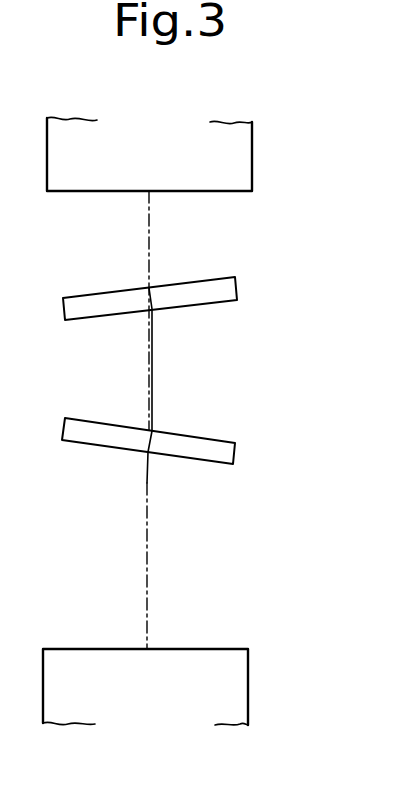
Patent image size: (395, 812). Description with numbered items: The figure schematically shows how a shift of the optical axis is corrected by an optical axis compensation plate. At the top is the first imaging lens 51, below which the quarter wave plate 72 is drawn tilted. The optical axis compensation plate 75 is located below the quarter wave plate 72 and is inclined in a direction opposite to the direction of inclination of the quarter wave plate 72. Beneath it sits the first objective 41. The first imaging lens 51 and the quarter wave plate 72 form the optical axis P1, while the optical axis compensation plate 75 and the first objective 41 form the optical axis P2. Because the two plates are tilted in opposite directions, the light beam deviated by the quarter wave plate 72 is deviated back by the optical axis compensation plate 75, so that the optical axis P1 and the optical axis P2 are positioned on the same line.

The first imaging lens 51 is at (252, 165).
The quarter wave plate 72 is at (237, 287).
The optical axis compensation plate 75 is at (236, 455).
The first objective 41 is at (248, 685).
The optical axis P1 is at (149, 237).
The optical axis P2 is at (146, 577).